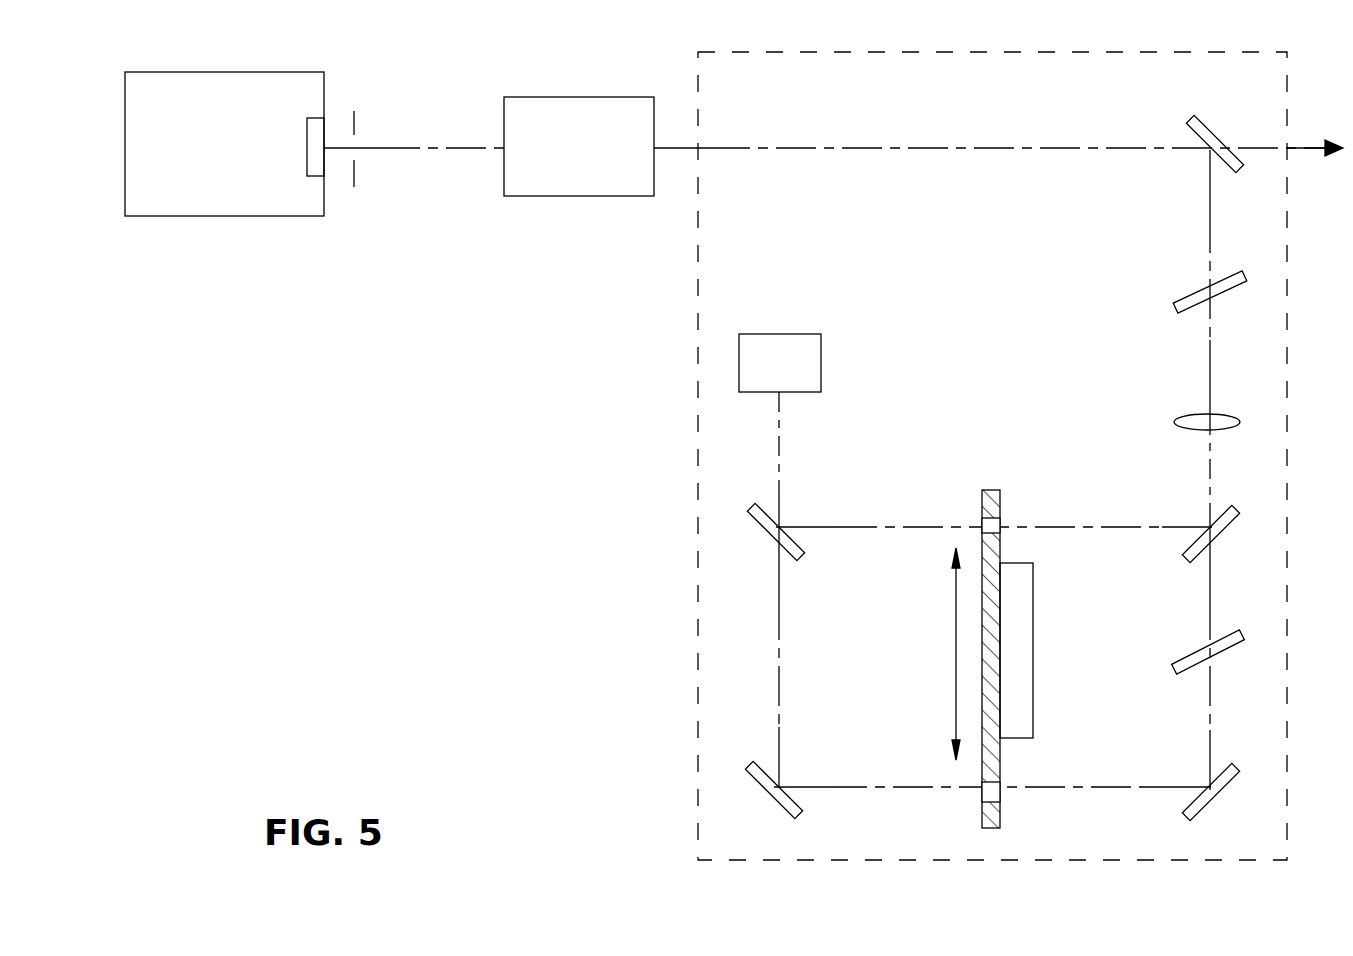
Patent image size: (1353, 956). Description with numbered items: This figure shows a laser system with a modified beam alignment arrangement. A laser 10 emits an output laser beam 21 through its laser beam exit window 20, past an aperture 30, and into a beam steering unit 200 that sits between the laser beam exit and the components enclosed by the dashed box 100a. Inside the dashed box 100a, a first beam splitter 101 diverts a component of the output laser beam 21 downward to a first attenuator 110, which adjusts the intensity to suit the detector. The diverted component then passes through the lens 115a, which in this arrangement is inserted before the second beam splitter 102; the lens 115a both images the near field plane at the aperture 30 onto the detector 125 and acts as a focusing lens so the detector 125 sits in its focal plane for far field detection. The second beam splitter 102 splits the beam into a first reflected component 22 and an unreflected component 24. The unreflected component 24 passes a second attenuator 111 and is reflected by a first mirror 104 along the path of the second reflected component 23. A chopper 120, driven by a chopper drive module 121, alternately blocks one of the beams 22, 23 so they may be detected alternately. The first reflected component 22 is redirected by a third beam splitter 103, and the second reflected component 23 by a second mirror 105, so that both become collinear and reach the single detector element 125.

The laser 10 is at (218, 72).
The laser beam exit window 20 is at (315, 136).
The aperture 30 is at (358, 178).
The beam steering unit 200 is at (590, 97).
The dashed box 100a is at (708, 450).
The output laser beam 21 is at (1312, 148).
The first beam splitter 101 is at (1193, 130).
The first attenuator 110 is at (1188, 302).
The lens 115a is at (1196, 420).
The second beam splitter 102 is at (1237, 505).
The second attenuator 111 is at (1178, 663).
The unreflected component 24 is at (1210, 748).
The first mirror 104 is at (1228, 778).
The second reflected component 23 is at (905, 527).
The first reflected component 22 is at (870, 787).
The detector element 125 is at (815, 364).
The third beam splitter 103 is at (757, 513).
The second mirror 105 is at (757, 777).
The chopper 120 is at (990, 495).
The chopper drive module 121 is at (1025, 600).